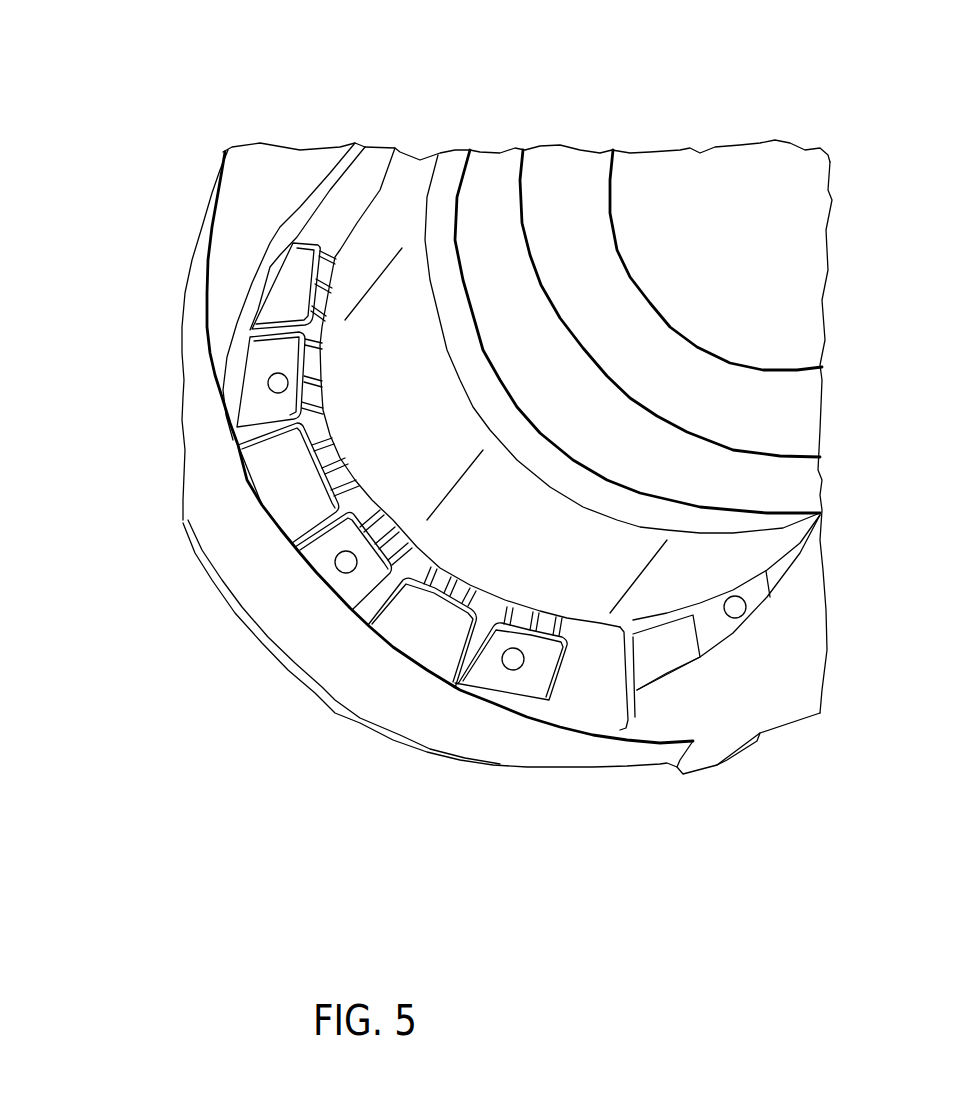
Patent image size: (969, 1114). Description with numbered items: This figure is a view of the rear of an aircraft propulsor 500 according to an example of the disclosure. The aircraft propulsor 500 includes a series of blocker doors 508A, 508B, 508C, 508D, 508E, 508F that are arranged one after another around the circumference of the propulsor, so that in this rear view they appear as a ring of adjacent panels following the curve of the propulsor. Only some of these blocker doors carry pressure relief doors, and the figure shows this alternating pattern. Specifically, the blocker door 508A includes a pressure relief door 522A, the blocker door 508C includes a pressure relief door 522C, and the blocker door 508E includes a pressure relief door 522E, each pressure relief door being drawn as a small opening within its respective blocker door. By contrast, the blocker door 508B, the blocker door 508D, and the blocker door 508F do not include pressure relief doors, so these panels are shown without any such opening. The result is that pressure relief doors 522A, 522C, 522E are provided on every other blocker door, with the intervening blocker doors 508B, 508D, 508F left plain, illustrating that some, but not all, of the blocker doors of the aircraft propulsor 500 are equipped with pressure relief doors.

The aircraft propulsor 500 is at (230, 60).
The blocker door 508A is at (527, 680).
The blocker door 508B is at (430, 650).
The blocker door 508C is at (318, 550).
The blocker door 508D is at (263, 458).
The blocker door 508E is at (258, 357).
The blocker door 508F is at (270, 298).
The pressure relief door 522A is at (513, 660).
The pressure relief door 522C is at (346, 575).
The pressure relief door 522E is at (268, 383).